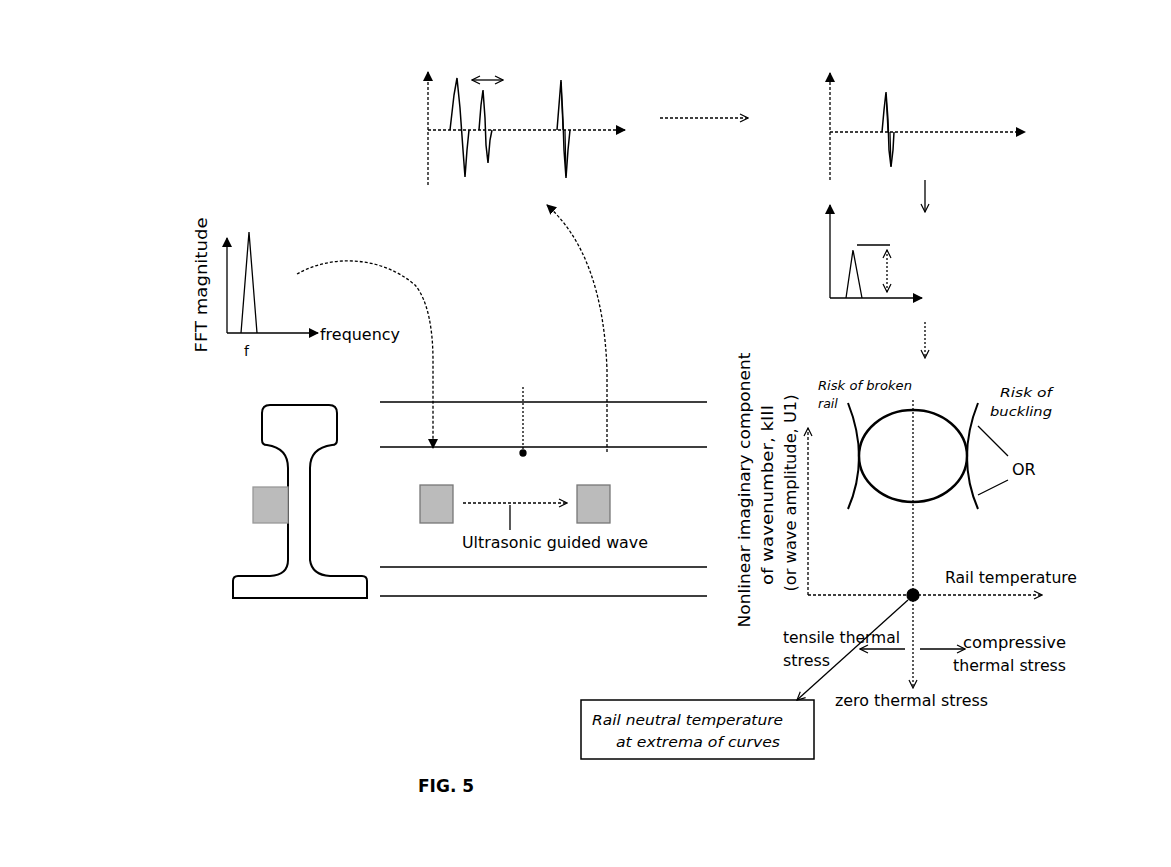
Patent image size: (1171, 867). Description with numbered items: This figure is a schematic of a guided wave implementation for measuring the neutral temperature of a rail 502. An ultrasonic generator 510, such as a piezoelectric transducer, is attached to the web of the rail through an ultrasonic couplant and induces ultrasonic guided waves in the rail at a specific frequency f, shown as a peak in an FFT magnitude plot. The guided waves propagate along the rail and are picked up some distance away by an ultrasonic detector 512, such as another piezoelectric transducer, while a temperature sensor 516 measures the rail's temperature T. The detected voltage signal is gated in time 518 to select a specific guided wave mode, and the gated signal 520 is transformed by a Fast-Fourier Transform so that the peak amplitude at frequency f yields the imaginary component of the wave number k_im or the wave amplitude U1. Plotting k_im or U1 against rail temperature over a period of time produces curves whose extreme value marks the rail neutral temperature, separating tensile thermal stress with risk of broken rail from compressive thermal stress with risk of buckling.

The rail 502 is at (655, 411).
The ultrasonic generator 510 is at (430, 515).
The ultrasonic detector 512 is at (617, 513).
The temperature sensor 516 is at (520, 403).
The time gating of the detected signal 518 is at (588, 84).
The gated signal (selected guided wave mode) 520 is at (1048, 113).